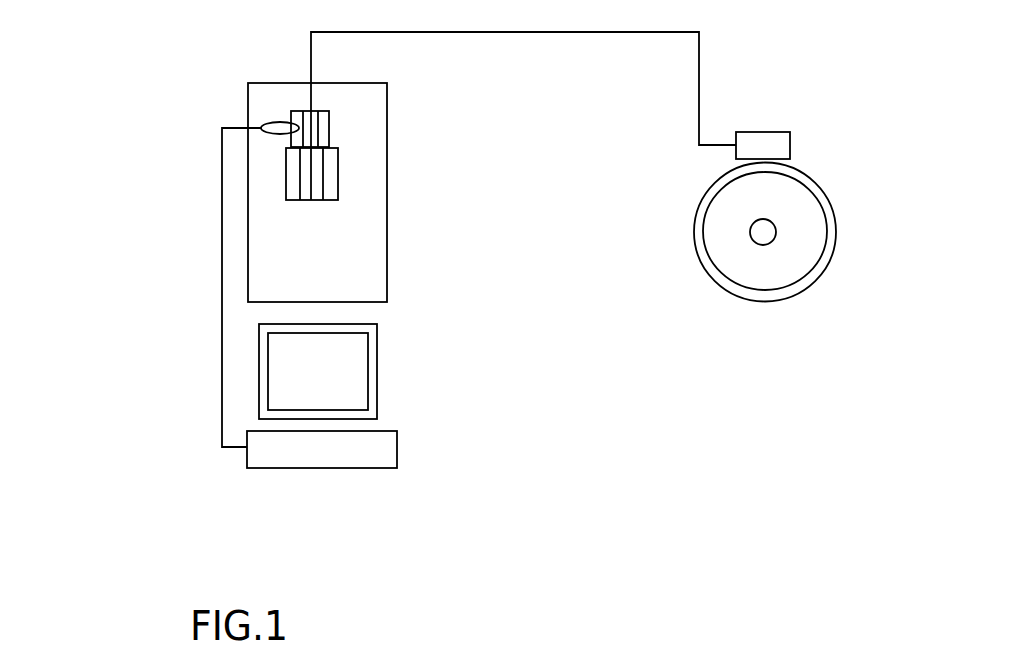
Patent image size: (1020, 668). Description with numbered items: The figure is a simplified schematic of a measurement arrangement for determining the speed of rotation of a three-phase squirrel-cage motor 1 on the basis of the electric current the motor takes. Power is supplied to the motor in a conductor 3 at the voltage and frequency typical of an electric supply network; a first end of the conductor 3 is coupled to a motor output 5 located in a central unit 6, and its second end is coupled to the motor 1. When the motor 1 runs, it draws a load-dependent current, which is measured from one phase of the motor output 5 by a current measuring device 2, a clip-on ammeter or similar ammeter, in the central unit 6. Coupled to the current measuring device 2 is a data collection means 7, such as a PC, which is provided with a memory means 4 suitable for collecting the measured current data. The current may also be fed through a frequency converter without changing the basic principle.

The squirrel-cage motor 1 is at (700, 298).
The current measuring device 2 is at (272, 123).
The conductor 3 is at (552, 33).
The memory means 4 is at (385, 445).
The motor output 5 is at (328, 167).
The central unit 6 is at (408, 202).
The data collection means 7 is at (478, 449).